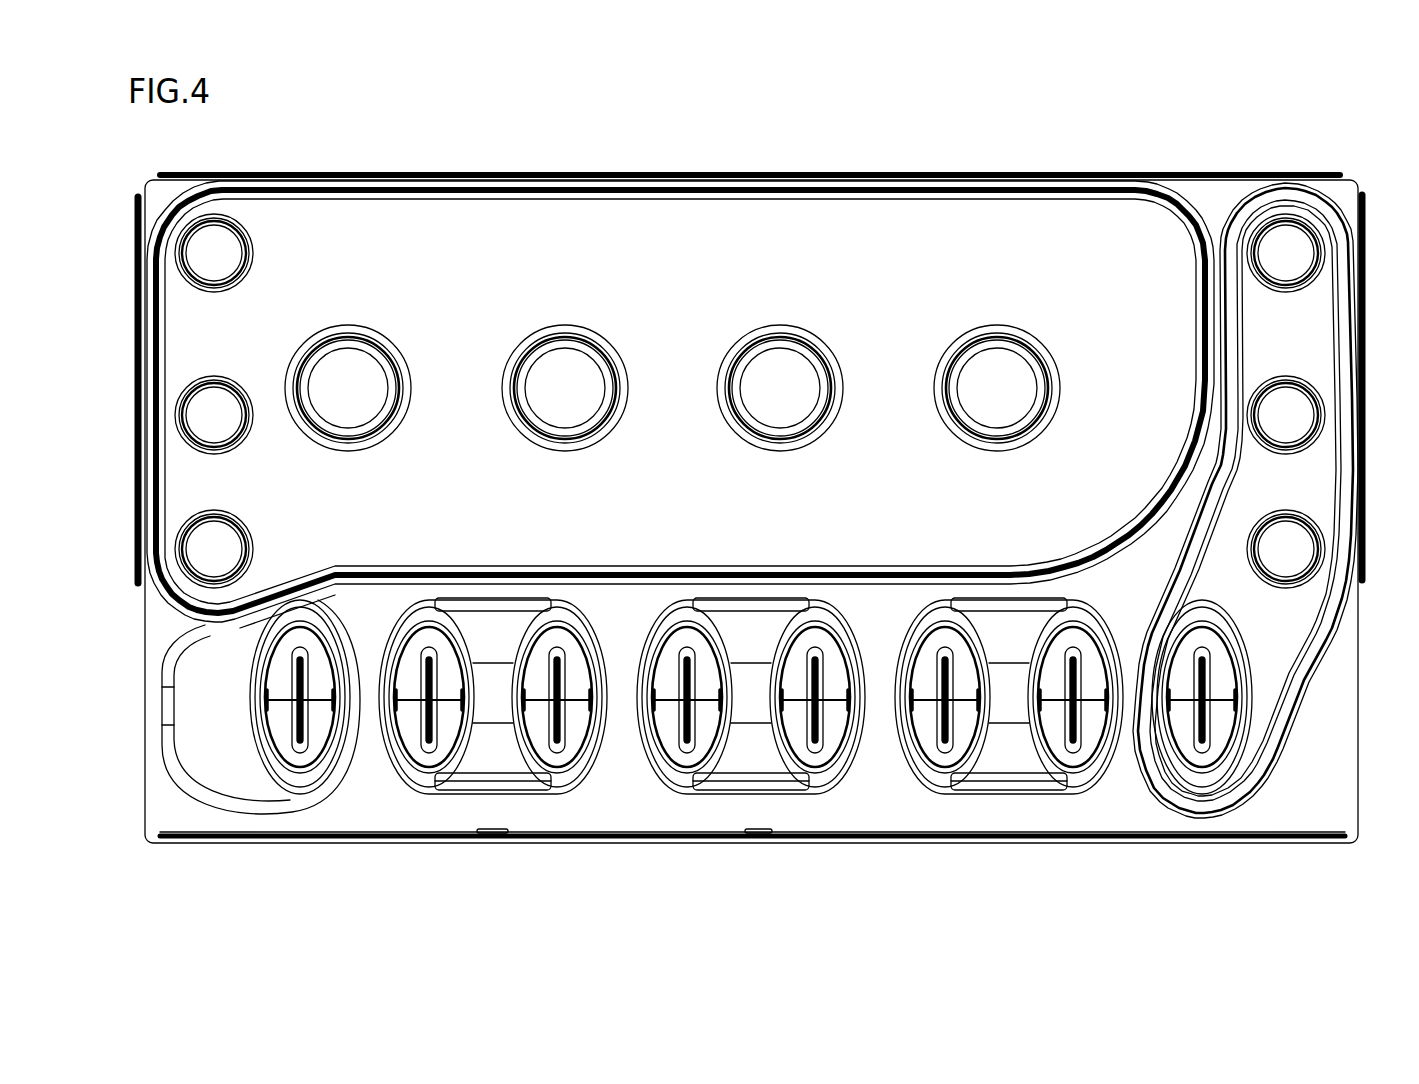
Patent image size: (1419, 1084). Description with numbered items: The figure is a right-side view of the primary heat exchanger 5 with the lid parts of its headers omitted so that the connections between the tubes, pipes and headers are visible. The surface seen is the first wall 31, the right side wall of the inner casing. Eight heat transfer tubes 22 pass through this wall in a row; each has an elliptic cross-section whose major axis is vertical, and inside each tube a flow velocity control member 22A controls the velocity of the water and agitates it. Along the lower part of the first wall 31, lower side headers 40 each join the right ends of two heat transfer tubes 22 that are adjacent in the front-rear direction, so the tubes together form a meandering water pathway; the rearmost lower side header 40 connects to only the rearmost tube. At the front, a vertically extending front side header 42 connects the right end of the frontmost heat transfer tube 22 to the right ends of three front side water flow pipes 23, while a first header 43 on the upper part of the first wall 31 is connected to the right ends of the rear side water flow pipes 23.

The primary heat exchanger 5 is at (620, 148).
The water flow pipes 23 is at (242, 567).
The first header 43 is at (343, 232).
The lower side headers 40 is at (1000, 748).
The heat transfer tubes 22 is at (1177, 697).
The flow velocity control member 22A is at (1053, 730).
The front side header 42 is at (1250, 757).
The first wall 31 is at (1327, 797).